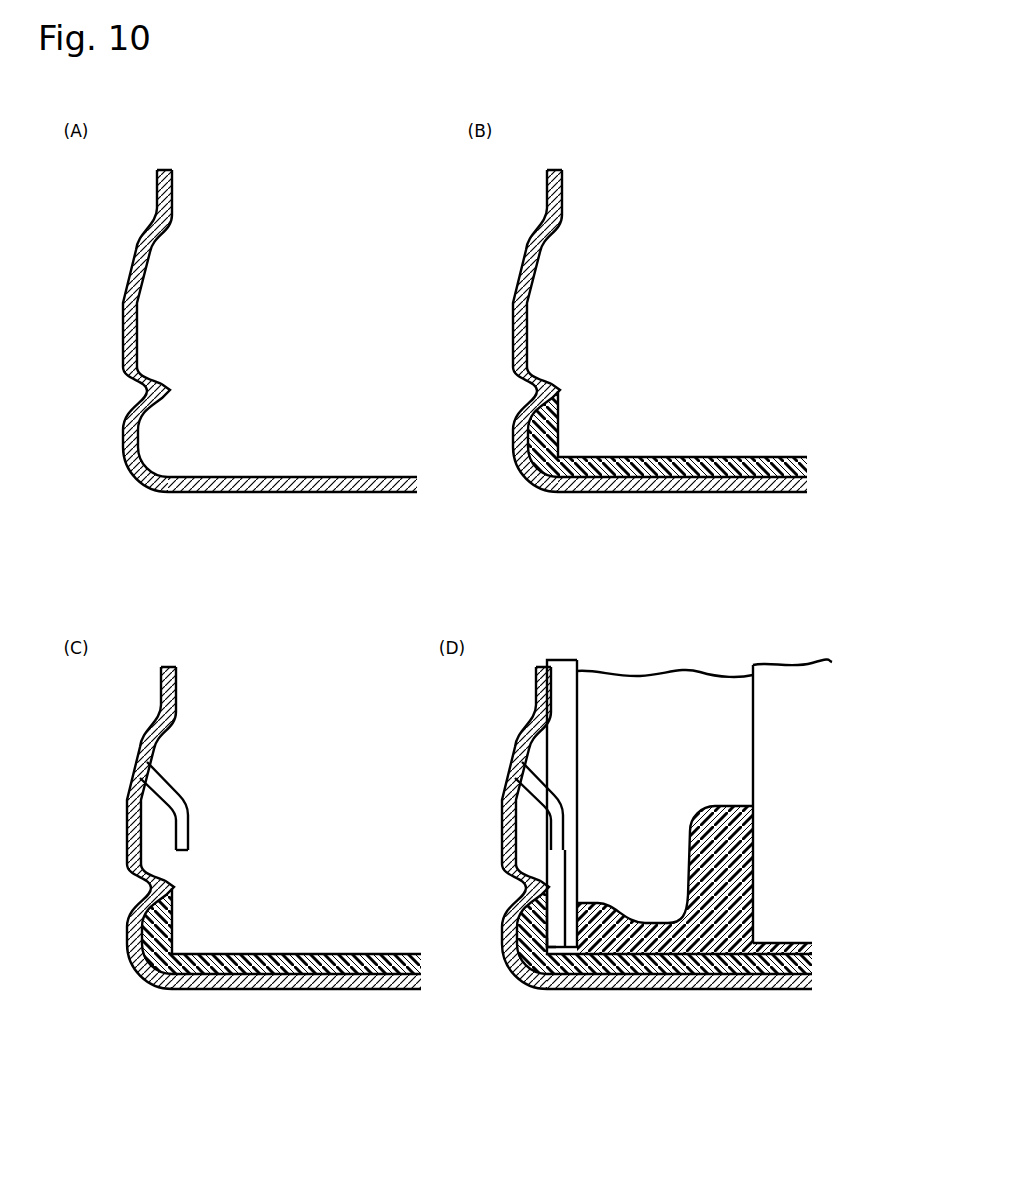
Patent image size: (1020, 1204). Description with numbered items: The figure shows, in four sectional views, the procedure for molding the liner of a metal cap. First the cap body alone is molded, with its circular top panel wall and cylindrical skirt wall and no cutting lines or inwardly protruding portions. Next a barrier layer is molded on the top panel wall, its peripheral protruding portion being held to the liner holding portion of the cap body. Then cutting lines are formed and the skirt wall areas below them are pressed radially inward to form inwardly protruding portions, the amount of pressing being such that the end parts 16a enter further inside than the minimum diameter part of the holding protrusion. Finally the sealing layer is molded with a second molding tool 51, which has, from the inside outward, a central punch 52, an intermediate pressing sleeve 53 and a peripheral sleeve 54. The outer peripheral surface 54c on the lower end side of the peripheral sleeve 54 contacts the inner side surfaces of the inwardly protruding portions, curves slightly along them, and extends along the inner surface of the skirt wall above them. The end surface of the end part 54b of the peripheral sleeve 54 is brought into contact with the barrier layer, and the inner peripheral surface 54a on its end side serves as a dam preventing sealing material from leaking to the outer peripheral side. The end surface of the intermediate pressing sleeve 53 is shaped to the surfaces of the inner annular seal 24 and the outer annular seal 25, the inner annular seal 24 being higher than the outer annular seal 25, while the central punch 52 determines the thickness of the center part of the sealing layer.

The end parts 16a is at (188, 853).
The inner annular seal 24 is at (718, 806).
The outer annular seal 25 is at (597, 903).
The second molding tool 51 is at (706, 654).
The central punch 52 is at (779, 782).
The intermediate pressing sleeve 53 is at (653, 732).
The peripheral sleeve 54 is at (563, 672).
The inner peripheral surface 54a is at (578, 760).
The end part 54b is at (572, 950).
The outer peripheral surface 54c is at (547, 947).